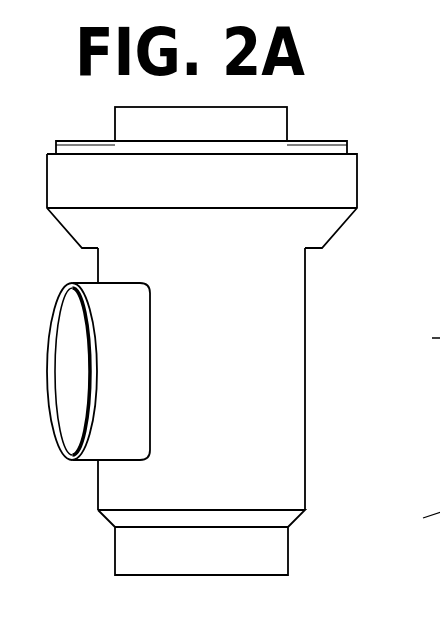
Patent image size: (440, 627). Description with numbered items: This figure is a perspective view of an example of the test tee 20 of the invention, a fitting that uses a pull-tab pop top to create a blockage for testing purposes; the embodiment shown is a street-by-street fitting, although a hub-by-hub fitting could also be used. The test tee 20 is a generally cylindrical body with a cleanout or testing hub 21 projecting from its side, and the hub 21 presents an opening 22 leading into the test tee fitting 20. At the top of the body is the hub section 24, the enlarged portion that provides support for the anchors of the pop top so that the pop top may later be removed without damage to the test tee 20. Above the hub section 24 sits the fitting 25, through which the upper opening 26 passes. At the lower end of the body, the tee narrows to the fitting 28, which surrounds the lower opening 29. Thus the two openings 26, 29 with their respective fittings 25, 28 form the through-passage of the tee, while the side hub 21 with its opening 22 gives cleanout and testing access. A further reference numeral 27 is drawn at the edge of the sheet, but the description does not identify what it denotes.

The test tee 20 is at (305, 370).
The cleanout or testing hub 21 is at (50, 303).
The opening 22 is at (82, 393).
The hub section 24 is at (357, 182).
The fitting 25 is at (288, 125).
The opening 26 is at (200, 107).
The housing element 27 is at (439, 284).
The fitting 28 is at (287, 543).
The opening 29 is at (202, 575).